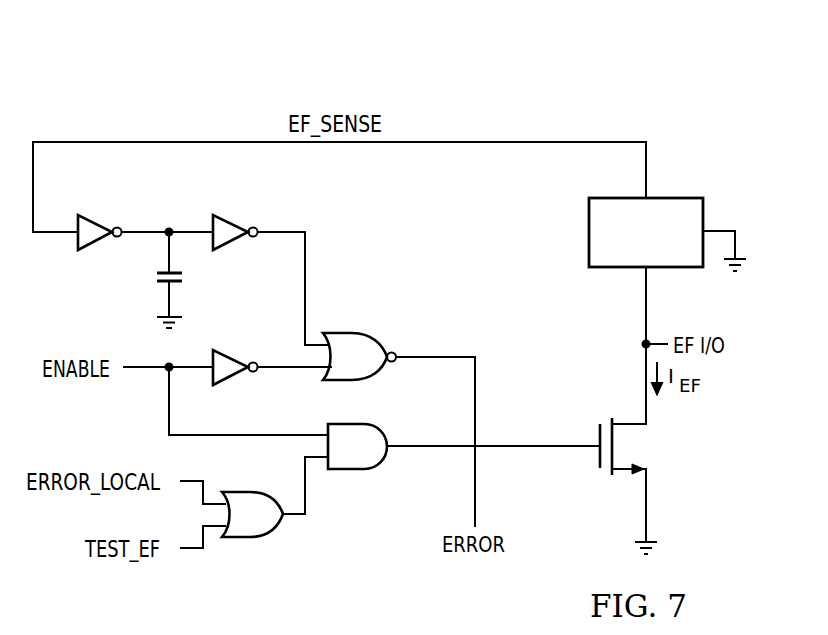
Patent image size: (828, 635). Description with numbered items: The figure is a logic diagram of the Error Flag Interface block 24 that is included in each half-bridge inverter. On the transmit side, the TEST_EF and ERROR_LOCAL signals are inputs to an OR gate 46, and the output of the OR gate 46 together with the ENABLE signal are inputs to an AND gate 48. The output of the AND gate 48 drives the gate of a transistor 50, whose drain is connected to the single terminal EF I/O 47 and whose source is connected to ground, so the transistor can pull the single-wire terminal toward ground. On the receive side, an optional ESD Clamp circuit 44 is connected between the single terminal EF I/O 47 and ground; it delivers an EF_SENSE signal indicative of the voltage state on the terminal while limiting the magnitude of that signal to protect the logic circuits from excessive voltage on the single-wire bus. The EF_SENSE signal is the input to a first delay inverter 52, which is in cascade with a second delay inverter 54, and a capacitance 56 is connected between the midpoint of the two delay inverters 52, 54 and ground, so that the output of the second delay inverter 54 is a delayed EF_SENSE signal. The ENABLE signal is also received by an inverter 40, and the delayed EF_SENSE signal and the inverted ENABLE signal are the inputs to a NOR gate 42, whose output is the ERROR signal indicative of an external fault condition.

The Error Flag Interface block 24 is at (688, 64).
The inverter 40 is at (234, 359).
The NOR gate 42 is at (350, 333).
The ESD Clamp circuit 44 is at (678, 198).
The OR gate 46 is at (250, 540).
The single terminal EF I/O 47 is at (652, 342).
The AND gate 48 is at (350, 471).
The transistor 50 is at (598, 459).
The first delay inverter 52 is at (98, 222).
The second delay inverter 54 is at (235, 222).
The capacitance 56 is at (157, 276).